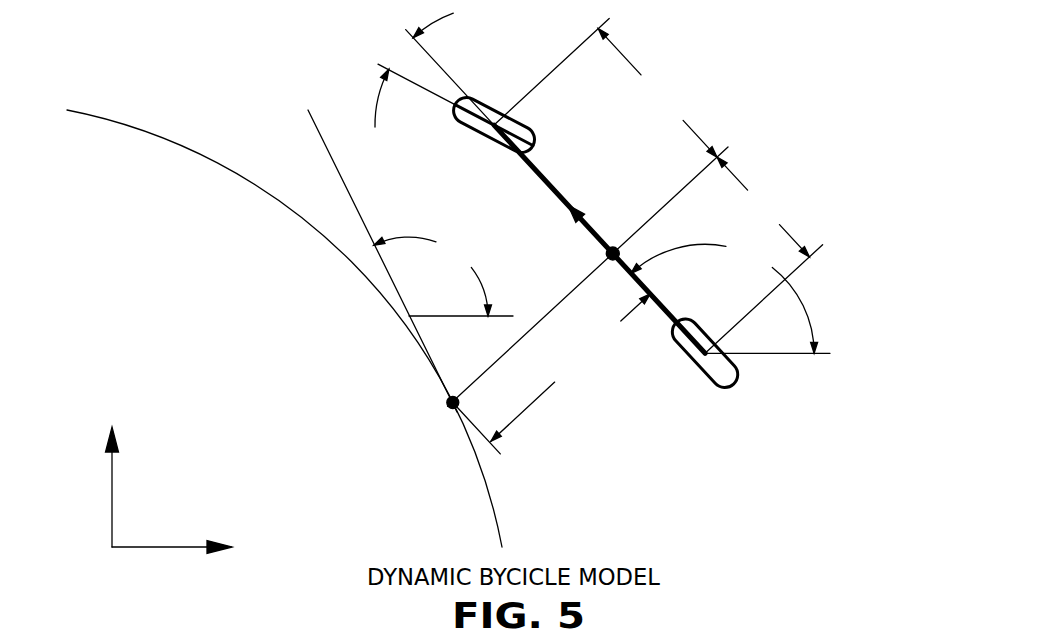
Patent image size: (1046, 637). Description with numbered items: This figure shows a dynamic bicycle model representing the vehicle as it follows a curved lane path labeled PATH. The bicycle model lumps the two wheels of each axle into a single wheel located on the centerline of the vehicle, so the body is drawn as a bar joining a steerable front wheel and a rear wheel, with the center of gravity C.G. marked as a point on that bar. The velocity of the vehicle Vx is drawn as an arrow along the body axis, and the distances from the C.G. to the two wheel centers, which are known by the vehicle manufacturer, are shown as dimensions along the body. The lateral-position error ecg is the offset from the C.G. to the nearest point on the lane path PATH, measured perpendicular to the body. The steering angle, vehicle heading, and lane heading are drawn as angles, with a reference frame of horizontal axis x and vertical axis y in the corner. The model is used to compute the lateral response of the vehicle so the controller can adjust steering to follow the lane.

The lane path PATH is at (123, 123).
The lateral-position error ecg is at (588, 294).
The center of gravity C.G. is at (605, 257).
The velocity of the vehicle Vx is at (553, 215).
The x axis x is at (172, 562).
The y axis y is at (99, 487).